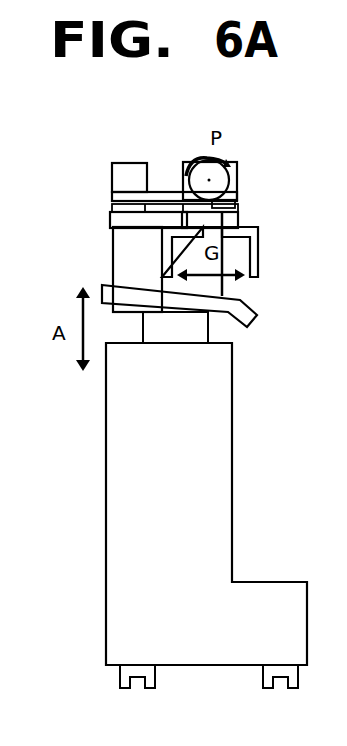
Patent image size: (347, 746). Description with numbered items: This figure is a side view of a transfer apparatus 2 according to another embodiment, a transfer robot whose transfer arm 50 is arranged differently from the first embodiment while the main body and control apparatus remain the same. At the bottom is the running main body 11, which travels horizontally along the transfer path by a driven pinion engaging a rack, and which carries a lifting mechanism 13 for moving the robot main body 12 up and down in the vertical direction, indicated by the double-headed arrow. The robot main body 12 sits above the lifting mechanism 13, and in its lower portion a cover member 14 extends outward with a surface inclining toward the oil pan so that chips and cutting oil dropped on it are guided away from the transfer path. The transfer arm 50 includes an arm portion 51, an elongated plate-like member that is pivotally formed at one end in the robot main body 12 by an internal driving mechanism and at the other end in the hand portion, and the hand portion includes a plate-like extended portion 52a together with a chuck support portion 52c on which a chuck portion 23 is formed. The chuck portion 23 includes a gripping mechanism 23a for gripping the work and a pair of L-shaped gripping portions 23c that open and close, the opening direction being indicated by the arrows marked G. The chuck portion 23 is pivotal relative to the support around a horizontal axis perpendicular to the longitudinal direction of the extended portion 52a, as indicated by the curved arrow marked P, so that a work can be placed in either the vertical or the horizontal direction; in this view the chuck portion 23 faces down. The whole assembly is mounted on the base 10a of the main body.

The transfer apparatus 2 is at (100, 131).
The transfer arm 50 is at (155, 140).
The arm end portion 52c is at (112, 163).
The extended portion 52a is at (112, 191).
The arm portion 51 is at (112, 218).
The robot main body 12 is at (122, 272).
The cover member 14 is at (258, 315).
The lifting mechanism 13 is at (198, 327).
The base unit 10a is at (265, 418).
The running main body 11 is at (112, 526).
The gripping mechanism 23a is at (236, 200).
The gripping portions 23c is at (238, 228).
The chuck portion 23 is at (265, 100).